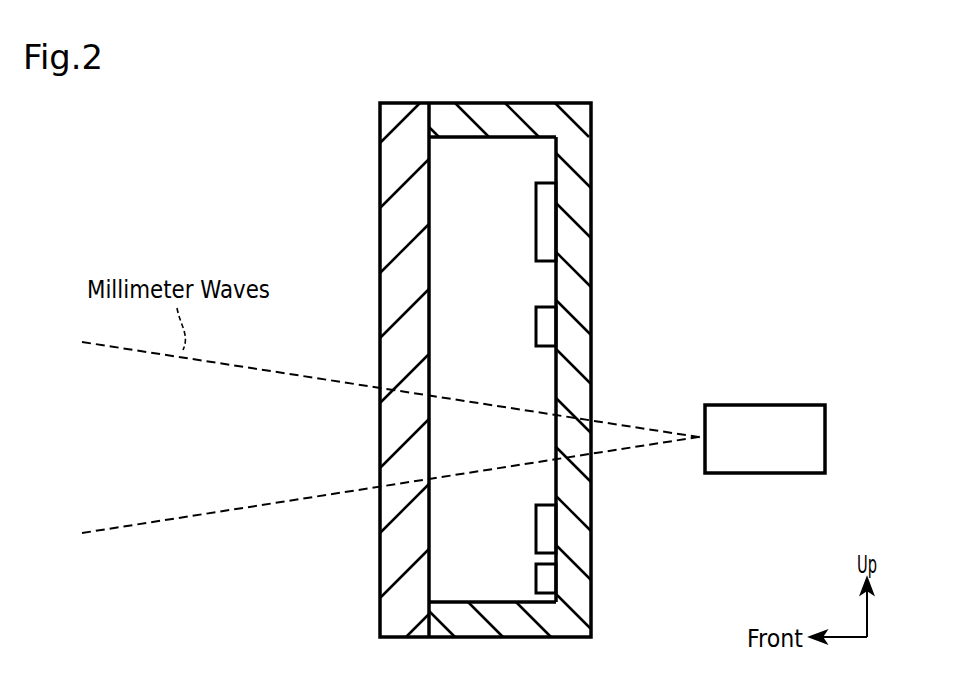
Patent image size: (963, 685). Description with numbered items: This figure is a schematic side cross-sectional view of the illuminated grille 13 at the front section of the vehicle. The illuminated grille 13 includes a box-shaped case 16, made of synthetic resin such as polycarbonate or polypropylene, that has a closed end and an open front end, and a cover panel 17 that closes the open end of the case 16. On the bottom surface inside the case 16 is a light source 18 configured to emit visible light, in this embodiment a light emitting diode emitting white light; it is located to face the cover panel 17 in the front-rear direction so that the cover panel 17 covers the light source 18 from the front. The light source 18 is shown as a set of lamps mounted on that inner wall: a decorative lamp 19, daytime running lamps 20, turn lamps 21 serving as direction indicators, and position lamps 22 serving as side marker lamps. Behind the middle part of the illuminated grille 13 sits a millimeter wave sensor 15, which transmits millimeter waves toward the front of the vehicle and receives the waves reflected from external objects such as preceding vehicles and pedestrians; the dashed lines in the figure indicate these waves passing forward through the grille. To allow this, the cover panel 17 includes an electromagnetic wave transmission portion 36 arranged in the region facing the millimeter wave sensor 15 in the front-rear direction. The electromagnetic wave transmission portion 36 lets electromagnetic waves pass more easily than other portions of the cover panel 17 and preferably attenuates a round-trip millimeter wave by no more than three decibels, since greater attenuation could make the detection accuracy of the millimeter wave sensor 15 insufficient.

The illuminated grille 13 is at (591, 125).
The millimeter wave sensor 15 is at (795, 405).
The case 16 is at (591, 297).
The cover panel 17 is at (380, 231).
The light source 18 is at (497, 392).
The decorative lamp 19 is at (536, 212).
The daytime running lamp 20 is at (536, 320).
The turn lamp 21 is at (536, 528).
The position lamp 22 is at (536, 578).
The electromagnetic wave transmission portion 36 is at (379, 378).